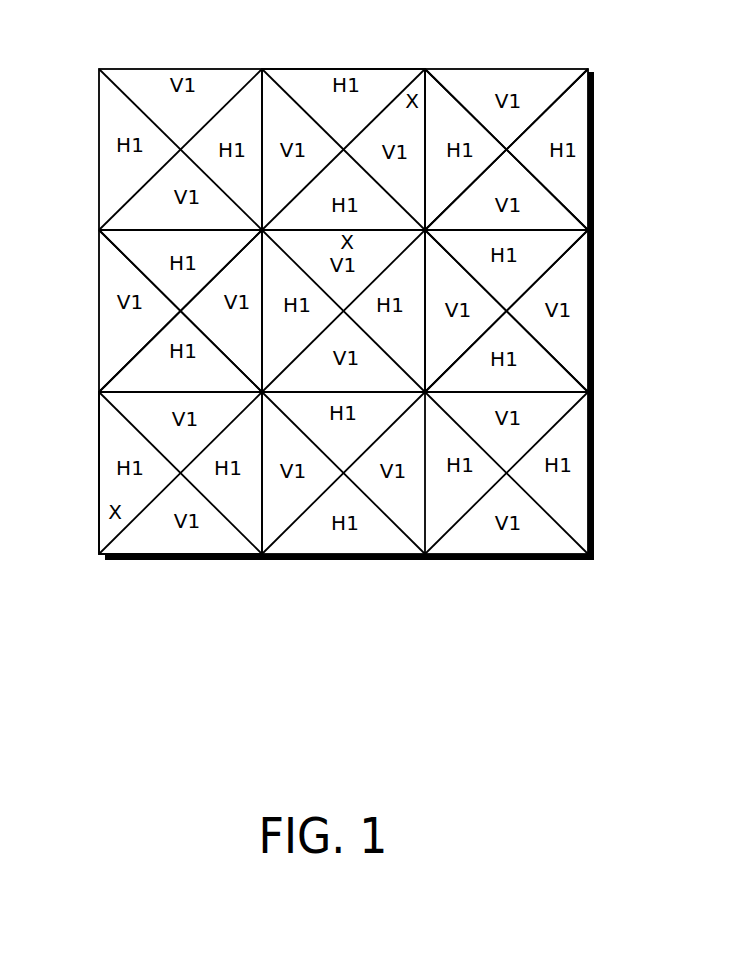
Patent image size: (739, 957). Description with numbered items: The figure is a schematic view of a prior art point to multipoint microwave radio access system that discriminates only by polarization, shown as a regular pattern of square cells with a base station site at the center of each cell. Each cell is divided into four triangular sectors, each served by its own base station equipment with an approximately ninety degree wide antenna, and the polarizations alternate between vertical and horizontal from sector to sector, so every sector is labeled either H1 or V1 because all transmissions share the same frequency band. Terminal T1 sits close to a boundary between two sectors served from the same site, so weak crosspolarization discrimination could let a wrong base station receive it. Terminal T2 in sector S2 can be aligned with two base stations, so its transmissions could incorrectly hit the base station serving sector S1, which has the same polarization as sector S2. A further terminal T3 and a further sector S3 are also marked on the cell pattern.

The terminal T1 is at (105, 530).
The terminal T2 is at (422, 84).
The third tile T3 is at (325, 242).
The sector S1 is at (208, 314).
The sector S2 is at (415, 165).
The third strip S3 is at (372, 262).